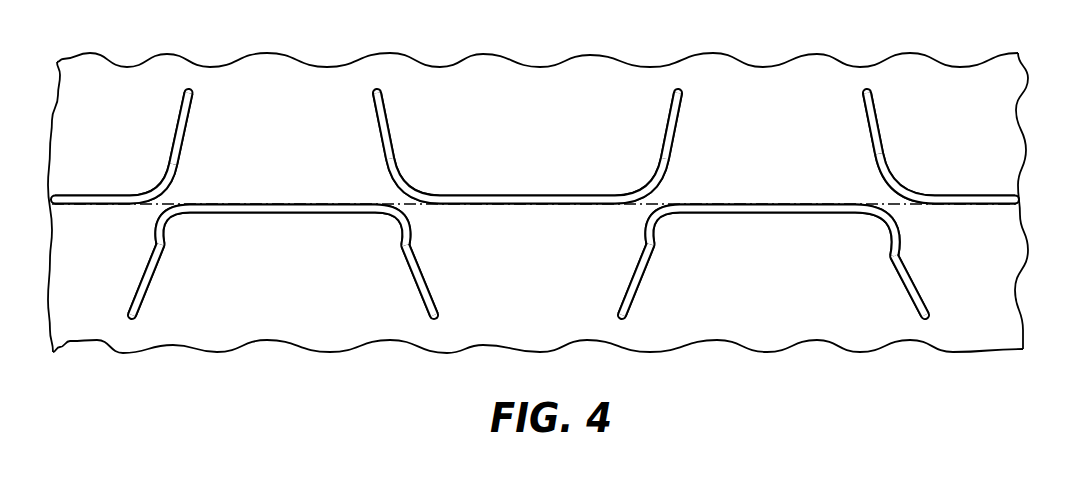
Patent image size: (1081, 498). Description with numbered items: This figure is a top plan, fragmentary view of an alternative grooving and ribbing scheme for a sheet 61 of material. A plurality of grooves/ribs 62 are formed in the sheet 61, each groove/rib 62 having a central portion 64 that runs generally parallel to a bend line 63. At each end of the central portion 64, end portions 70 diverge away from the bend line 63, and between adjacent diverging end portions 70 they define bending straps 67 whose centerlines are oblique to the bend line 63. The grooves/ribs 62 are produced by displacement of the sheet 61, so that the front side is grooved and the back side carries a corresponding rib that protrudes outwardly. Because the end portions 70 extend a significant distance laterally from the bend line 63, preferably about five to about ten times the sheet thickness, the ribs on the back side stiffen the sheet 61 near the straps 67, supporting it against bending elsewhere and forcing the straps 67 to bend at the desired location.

The sheet 61 is at (281, 131).
The groove/rib 62 is at (73, 206).
The bend line 63 is at (187, 204).
The central portion 64 is at (323, 197).
The bending strap 67 is at (152, 212).
The end portion 70 is at (151, 239).